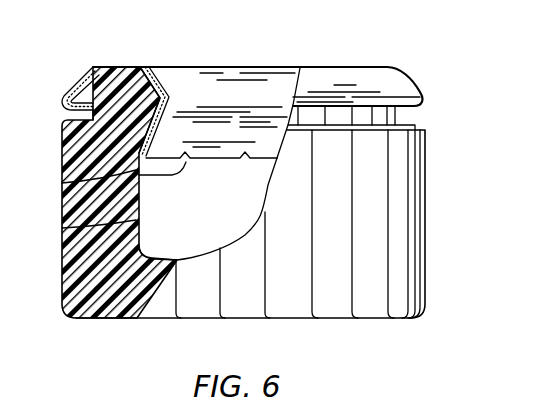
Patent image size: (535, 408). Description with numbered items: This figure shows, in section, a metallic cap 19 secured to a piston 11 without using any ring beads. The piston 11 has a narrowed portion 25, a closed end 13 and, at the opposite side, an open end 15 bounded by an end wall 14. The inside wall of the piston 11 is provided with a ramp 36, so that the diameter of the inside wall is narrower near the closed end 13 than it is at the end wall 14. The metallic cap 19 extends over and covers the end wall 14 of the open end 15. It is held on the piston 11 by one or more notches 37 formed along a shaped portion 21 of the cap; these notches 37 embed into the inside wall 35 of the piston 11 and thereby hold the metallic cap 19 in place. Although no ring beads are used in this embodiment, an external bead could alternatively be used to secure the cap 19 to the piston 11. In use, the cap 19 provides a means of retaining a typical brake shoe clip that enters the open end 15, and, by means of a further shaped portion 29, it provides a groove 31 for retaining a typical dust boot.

The piston 11 is at (428, 201).
The closed end 13 is at (250, 310).
The end wall 14 is at (122, 66).
The open end 15 is at (183, 203).
The metallic cap 19 is at (197, 72).
The shaped portion 21 is at (100, 141).
The narrowed portion 25 is at (100, 66).
The shaped portion 29 is at (72, 93).
The groove 31 is at (93, 117).
The inside wall 35 is at (62, 228).
The ramp 36 is at (150, 66).
The notches 37 is at (62, 183).